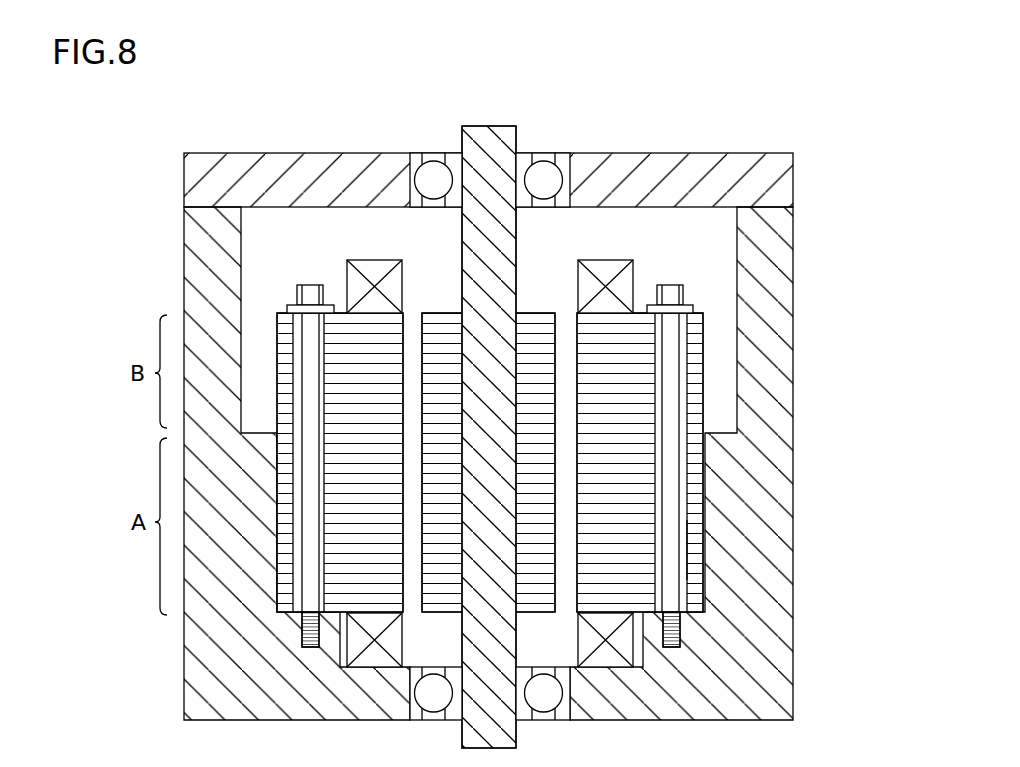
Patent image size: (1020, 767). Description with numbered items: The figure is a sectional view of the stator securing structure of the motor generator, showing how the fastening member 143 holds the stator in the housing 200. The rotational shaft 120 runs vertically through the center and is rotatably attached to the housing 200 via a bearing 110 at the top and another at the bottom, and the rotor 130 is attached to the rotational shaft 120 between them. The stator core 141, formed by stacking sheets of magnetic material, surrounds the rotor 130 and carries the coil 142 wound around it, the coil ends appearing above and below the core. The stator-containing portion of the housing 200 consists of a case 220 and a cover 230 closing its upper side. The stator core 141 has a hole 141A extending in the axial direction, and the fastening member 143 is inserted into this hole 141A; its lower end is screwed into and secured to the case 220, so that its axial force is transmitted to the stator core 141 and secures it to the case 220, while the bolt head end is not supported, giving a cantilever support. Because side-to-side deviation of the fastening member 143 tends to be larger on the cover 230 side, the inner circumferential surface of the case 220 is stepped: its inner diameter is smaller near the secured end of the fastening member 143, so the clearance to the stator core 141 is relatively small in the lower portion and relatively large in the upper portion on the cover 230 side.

The bearing 110 is at (541, 172).
The rotational shaft 120 is at (487, 145).
The rotor 130 is at (540, 333).
The stator core 141 is at (633, 477).
The hole 141A is at (690, 553).
The coil 142 is at (635, 272).
The fastening member 143 is at (670, 375).
The housing 200 is at (424, 436).
The case 220 is at (212, 250).
The cover 230 is at (212, 184).